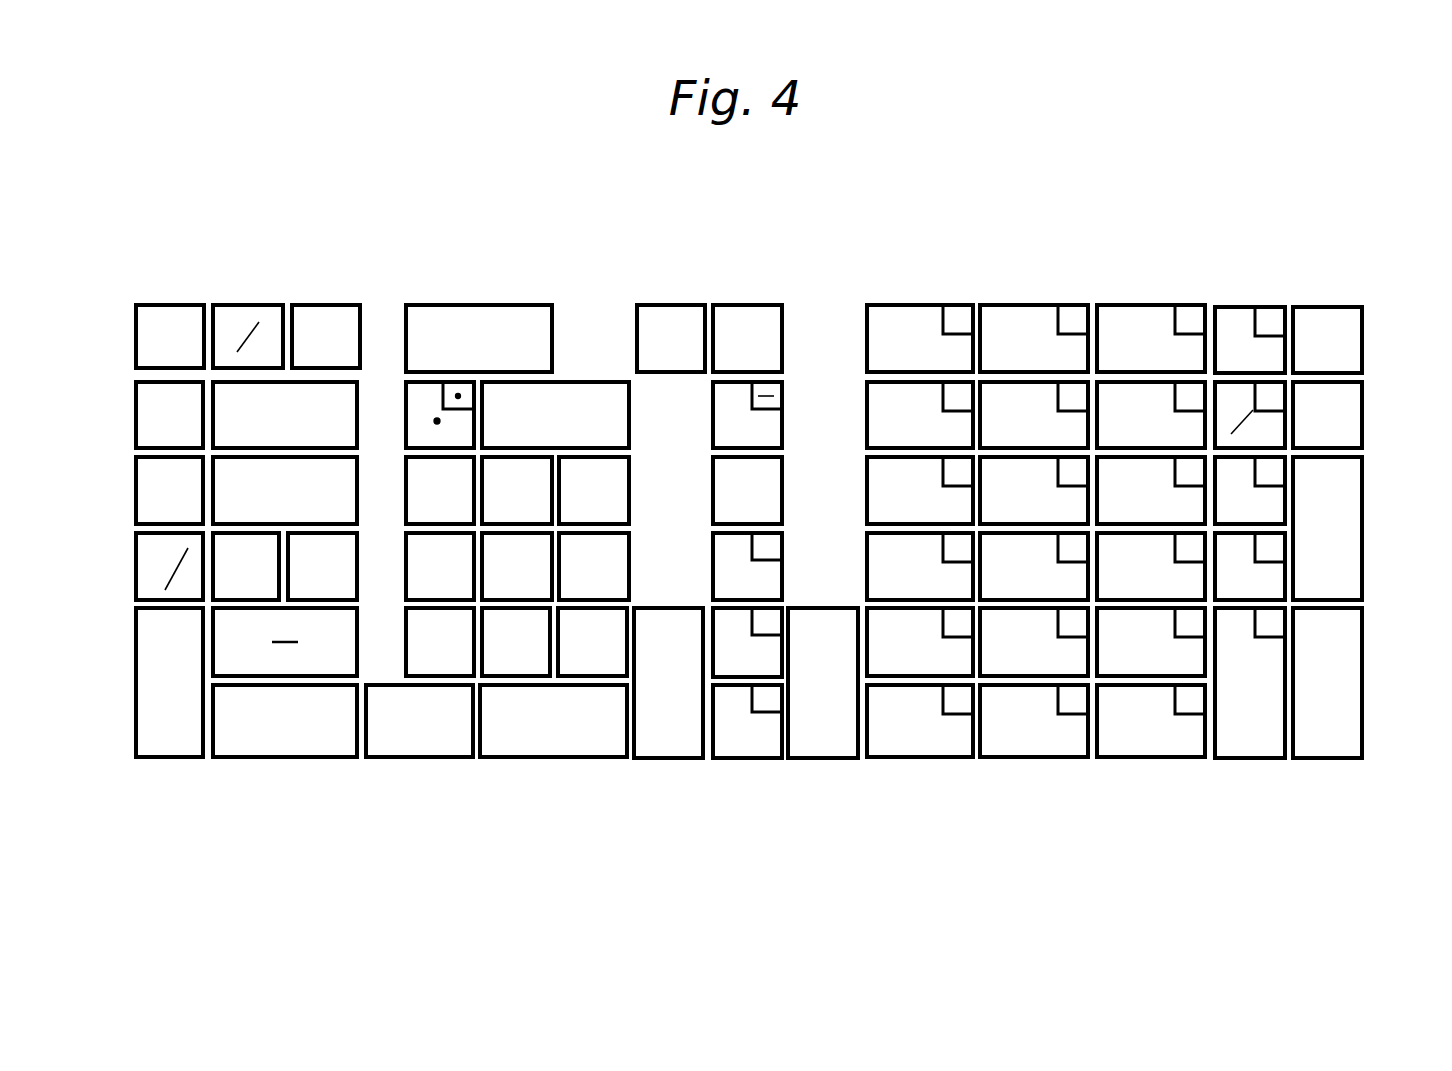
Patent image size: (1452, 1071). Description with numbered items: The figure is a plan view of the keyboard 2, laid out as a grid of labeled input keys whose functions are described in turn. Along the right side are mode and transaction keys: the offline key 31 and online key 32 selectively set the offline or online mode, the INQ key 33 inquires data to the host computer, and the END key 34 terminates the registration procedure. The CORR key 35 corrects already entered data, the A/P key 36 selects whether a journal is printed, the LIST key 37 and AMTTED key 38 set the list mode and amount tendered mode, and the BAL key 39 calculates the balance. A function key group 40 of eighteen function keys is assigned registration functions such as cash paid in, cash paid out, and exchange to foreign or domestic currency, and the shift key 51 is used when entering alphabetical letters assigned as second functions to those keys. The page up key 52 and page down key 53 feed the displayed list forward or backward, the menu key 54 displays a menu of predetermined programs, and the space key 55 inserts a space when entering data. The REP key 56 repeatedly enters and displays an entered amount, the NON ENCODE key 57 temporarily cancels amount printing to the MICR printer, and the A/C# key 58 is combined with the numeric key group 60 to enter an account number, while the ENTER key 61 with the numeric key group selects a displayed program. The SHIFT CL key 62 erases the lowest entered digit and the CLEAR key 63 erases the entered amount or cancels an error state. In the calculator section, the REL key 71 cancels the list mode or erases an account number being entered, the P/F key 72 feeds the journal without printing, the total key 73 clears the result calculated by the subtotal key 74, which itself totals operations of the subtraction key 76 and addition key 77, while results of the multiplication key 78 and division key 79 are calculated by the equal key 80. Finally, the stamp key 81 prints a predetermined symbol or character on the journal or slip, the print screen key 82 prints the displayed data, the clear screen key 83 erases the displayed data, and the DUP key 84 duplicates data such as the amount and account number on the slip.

The keyboard 2 is at (1252, 160).
The offline key 31 is at (1318, 315).
The online key 32 is at (1350, 393).
The INQ key 33 is at (1350, 518).
The END key 34 is at (1345, 658).
The CORR key 35 is at (1240, 315).
The A/P key 36 is at (1265, 437).
The LIST key 37 is at (1275, 490).
The AMTTED key 38 is at (1270, 579).
The BAL key 39 is at (1250, 745).
The function key group 40 is at (1140, 278).
The shift key 51 is at (826, 745).
The page up key 52 is at (669, 312).
The page down key 53 is at (745, 315).
The menu key 54 is at (770, 436).
The space key 55 is at (770, 510).
The REP key 56 is at (766, 592).
The NON ENCODE key 57 is at (725, 622).
The A/C# key 58 is at (740, 745).
The numeric key group 60 is at (369, 763).
The ENTER key 61 is at (657, 745).
The SHIFT CL key 62 is at (576, 398).
The CLEAR key 63 is at (459, 312).
The REL key 71 is at (332, 315).
The P/F key 72 is at (256, 315).
The total key 73 is at (340, 432).
The subtotal key 74 is at (340, 503).
The subtraction key 76 is at (327, 630).
The addition key 77 is at (300, 735).
The multiplication key 78 is at (265, 582).
The division key 79 is at (340, 565).
The equal key 80 is at (143, 590).
The stamp key 81 is at (176, 316).
The print screen key 82 is at (143, 436).
The clear screen key 83 is at (143, 510).
The DUP key 84 is at (143, 656).